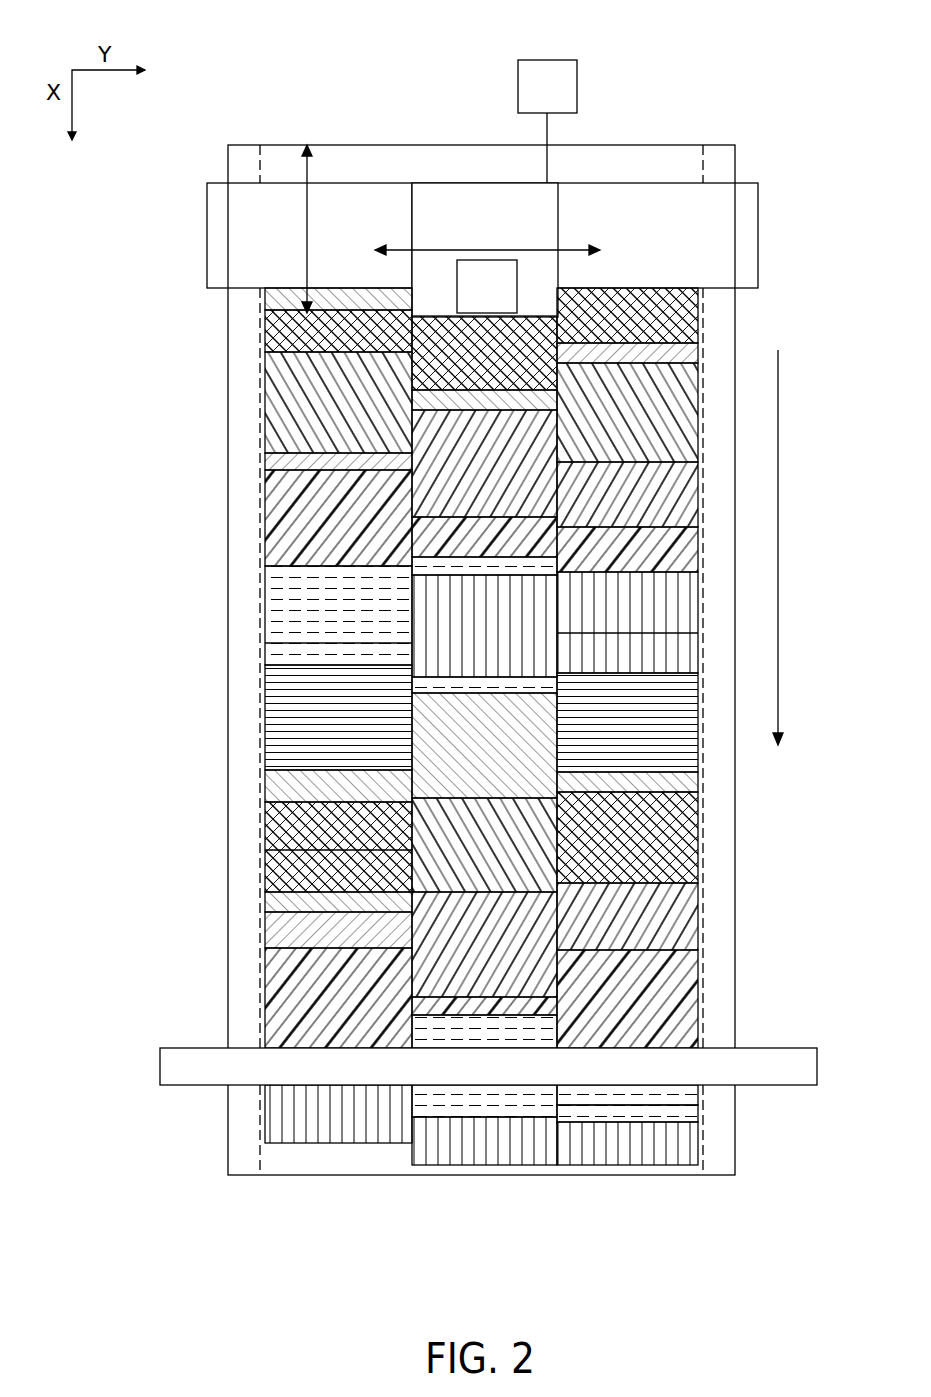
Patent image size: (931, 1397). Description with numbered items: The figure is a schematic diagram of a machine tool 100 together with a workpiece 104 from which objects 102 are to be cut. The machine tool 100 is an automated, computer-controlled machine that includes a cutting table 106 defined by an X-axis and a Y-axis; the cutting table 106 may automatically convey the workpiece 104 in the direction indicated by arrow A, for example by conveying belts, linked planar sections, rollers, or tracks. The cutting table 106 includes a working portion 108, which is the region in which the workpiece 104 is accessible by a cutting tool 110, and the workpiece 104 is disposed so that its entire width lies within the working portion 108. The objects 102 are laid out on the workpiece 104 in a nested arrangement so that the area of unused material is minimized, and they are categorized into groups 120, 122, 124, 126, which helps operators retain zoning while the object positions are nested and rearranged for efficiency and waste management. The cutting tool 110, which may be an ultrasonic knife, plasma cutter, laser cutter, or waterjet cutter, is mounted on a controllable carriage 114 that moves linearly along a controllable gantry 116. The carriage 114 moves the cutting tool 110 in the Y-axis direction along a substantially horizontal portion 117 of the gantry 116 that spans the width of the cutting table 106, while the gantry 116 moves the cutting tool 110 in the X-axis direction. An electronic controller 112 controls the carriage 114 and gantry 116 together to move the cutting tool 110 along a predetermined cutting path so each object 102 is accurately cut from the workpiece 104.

The machine tool 100 is at (248, 40).
The objects 102 is at (716, 350).
The workpiece 104 is at (623, 165).
The cutting table 106 is at (228, 330).
The working portion 108 is at (703, 845).
The cutting tool 110 is at (487, 286).
The electronic controller 112 is at (547, 121).
The carriage 114 is at (487, 250).
The gantry 116 is at (482, 235).
The horizontal portion 117 is at (338, 180).
The group 120 is at (244, 406).
The group 122 is at (244, 461).
The group 124 is at (244, 530).
The group 126 is at (244, 617).